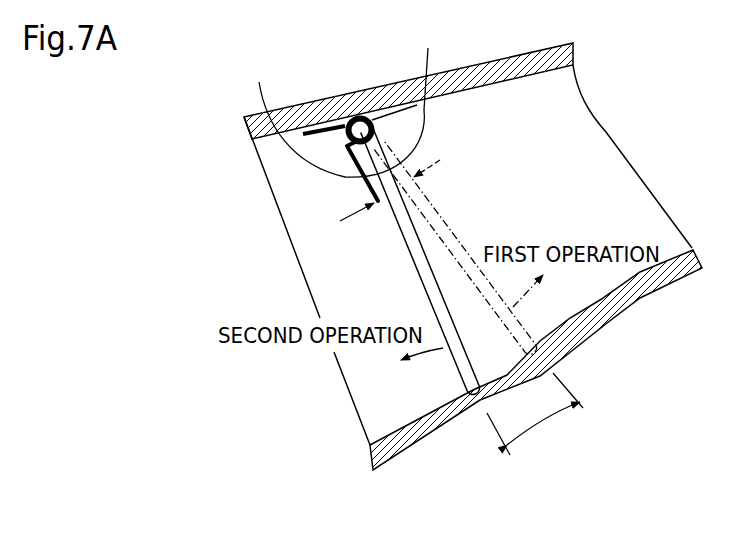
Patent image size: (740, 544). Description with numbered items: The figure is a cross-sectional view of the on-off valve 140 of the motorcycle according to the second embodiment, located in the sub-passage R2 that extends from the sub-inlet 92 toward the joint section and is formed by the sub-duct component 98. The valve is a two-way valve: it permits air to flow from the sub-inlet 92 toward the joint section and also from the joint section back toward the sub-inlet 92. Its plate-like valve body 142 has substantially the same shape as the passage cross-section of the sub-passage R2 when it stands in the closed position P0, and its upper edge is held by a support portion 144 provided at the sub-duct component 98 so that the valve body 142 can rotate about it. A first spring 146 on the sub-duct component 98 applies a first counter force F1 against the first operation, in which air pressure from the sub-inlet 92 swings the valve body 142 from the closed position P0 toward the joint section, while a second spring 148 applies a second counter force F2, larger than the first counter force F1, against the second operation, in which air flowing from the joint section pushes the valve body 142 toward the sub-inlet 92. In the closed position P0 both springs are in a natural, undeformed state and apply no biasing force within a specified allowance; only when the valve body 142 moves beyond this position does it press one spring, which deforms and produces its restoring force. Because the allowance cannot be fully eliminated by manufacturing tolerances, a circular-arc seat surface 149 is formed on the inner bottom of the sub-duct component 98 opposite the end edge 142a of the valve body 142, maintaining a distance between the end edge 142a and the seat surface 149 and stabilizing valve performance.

The sub-inlet 92 is at (332, 384).
The sub-duct component 98 is at (620, 324).
The sub-passage R2 is at (518, 126).
The on-off valve 140 is at (351, 190).
The valve body 142 is at (408, 252).
The end edge 142a is at (476, 394).
The support portion 144 is at (358, 117).
The first spring 146 is at (351, 99).
The second spring 148 is at (328, 131).
The seat surface 149 is at (508, 377).
The closed position P0 is at (535, 415).
The first counter force F1 is at (443, 159).
The second counter force F2 is at (340, 221).